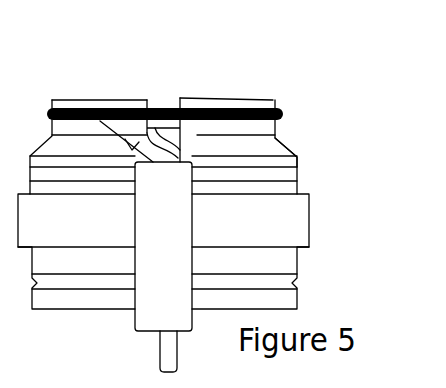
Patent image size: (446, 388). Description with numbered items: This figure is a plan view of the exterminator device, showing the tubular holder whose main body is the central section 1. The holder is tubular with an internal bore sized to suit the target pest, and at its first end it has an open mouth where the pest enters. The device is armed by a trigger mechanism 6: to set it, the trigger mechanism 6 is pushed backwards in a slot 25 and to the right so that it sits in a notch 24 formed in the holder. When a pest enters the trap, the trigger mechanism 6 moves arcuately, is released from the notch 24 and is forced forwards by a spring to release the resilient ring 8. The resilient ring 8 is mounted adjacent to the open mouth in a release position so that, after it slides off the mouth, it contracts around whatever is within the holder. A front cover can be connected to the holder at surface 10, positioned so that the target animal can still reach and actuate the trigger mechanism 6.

The central section 1 is at (222, 197).
The trigger mechanism 6 is at (218, 101).
The resilient ring 8 is at (284, 113).
The surface 10 is at (298, 162).
The notch 24 is at (72, 100).
The slot 25 is at (163, 88).